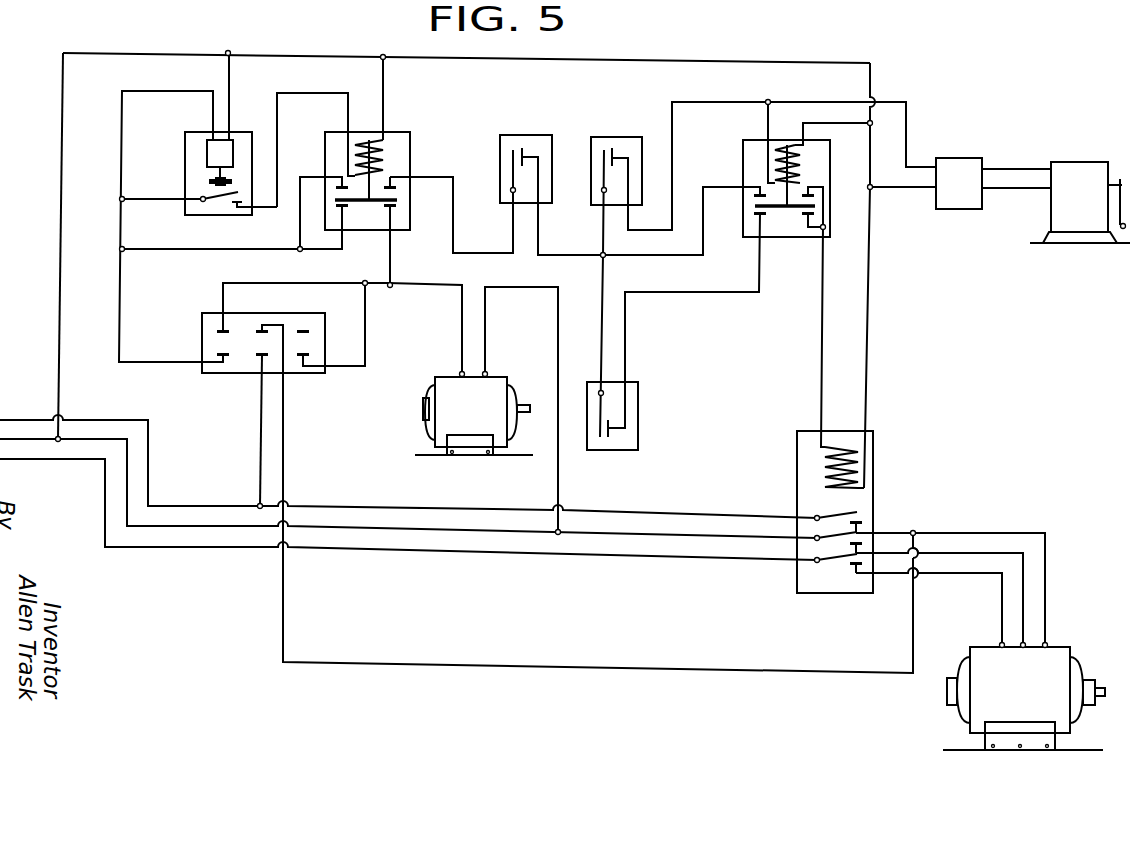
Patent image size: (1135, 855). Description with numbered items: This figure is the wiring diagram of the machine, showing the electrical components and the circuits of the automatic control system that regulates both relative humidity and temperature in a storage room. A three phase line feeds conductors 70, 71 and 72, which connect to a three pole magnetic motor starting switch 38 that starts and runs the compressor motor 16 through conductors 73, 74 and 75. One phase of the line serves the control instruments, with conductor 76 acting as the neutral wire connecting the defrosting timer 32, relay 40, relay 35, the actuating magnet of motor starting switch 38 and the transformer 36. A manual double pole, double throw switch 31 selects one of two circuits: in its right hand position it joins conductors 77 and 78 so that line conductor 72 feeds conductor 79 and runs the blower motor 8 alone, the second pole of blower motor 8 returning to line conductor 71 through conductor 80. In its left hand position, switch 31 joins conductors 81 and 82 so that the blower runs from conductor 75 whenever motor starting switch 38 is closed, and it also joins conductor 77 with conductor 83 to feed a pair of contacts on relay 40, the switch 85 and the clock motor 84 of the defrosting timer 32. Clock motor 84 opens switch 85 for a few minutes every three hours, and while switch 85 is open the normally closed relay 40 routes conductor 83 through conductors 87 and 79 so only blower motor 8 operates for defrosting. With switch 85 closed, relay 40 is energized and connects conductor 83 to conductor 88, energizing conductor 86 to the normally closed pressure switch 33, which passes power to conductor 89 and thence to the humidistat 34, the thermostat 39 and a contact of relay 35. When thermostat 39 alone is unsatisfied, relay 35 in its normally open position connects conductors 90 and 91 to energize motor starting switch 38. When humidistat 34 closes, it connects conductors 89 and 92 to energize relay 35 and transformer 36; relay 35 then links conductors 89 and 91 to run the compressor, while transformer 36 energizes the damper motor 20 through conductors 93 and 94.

The conductor 76 is at (190, 49).
The conductor 83 is at (132, 93).
The defrosting timer 32 is at (197, 132).
The clock motor 84 is at (229, 148).
The switch 85 is at (212, 202).
The conductor 86 is at (278, 150).
The relay 40 is at (400, 133).
The conductor 88 is at (428, 177).
The pressure switch 33 is at (540, 136).
The conductor 89 is at (562, 249).
The humidistat 34 is at (622, 139).
The conductor 92 is at (676, 163).
The relay 35 is at (828, 158).
The conductor 90 is at (697, 293).
The conductor 91 is at (821, 342).
The conductor 94 is at (1011, 190).
The transformer 36 is at (957, 209).
The conductor 93 is at (998, 168).
The damper motor 20 is at (1072, 162).
The conductor 87 is at (392, 258).
The conductor 82 is at (222, 296).
The conductor 79 is at (408, 288).
The manual double pole, double throw switch 31 is at (322, 314).
The conductor 78 is at (340, 372).
The conductor 77 is at (259, 419).
The conductor 81 is at (276, 320).
The conductor 80 is at (557, 341).
The blower motor 8 is at (478, 414).
The thermostat 39 is at (640, 402).
The three pole magnetic motor starting switch 38 is at (876, 456).
The conductor 72 is at (38, 418).
The conductor 71 is at (690, 530).
The conductor 70 is at (52, 462).
The conductor 75 is at (920, 530).
The conductor 74 is at (957, 553).
The conductor 73 is at (985, 573).
The compressor motor 16 is at (1050, 653).